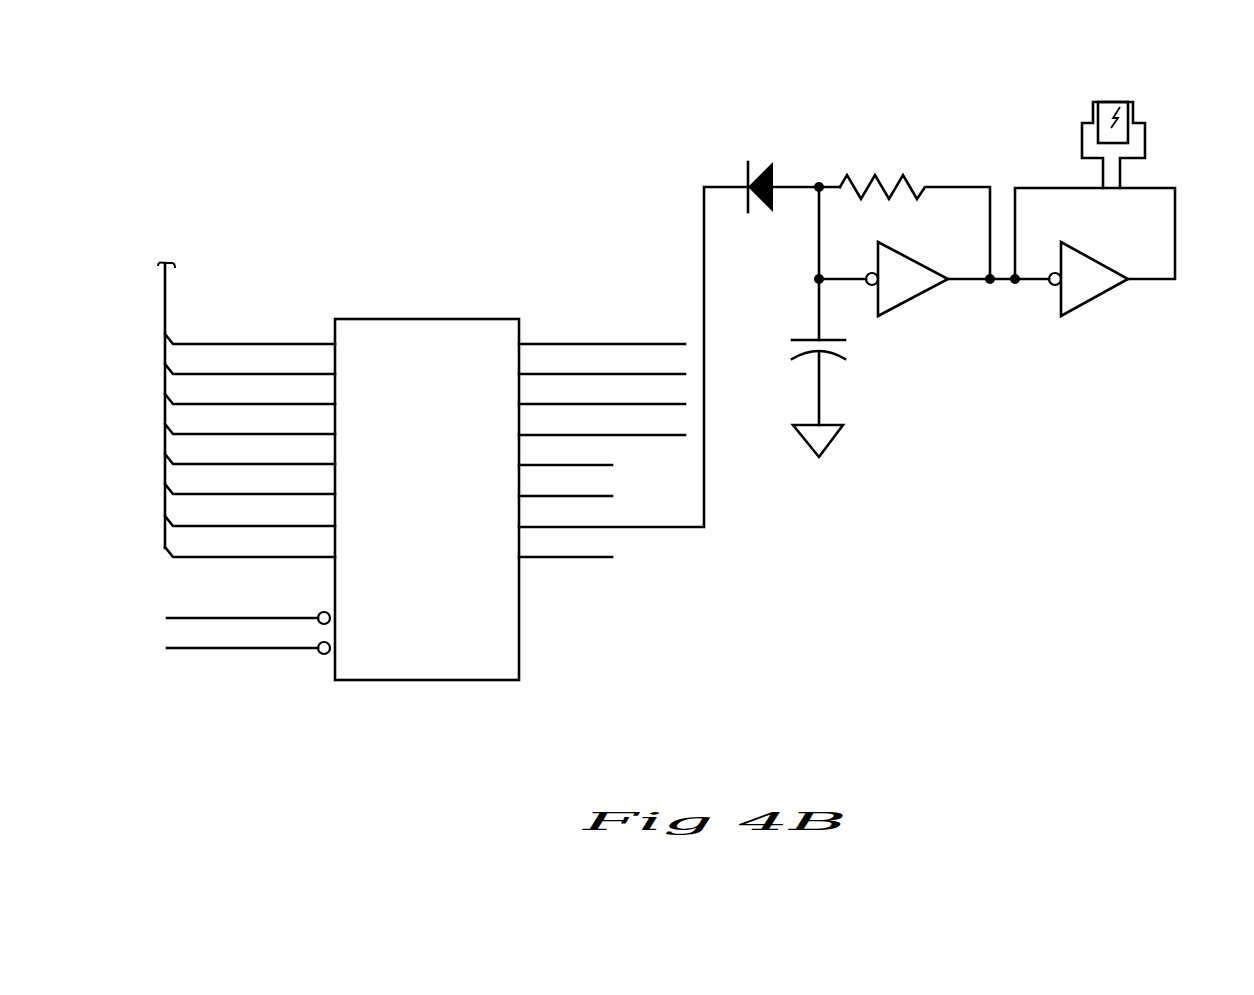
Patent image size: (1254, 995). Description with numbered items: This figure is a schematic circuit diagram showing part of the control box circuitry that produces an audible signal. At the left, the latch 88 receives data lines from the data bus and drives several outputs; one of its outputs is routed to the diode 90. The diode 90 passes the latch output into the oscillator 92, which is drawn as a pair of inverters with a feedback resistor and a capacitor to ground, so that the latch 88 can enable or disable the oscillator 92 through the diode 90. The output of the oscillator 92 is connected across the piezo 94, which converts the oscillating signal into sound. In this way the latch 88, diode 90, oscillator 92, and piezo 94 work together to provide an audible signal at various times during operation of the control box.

The latch 88 is at (425, 345).
The diode 90 is at (757, 173).
The oscillator 92 is at (985, 365).
The piezo 94 is at (1113, 128).